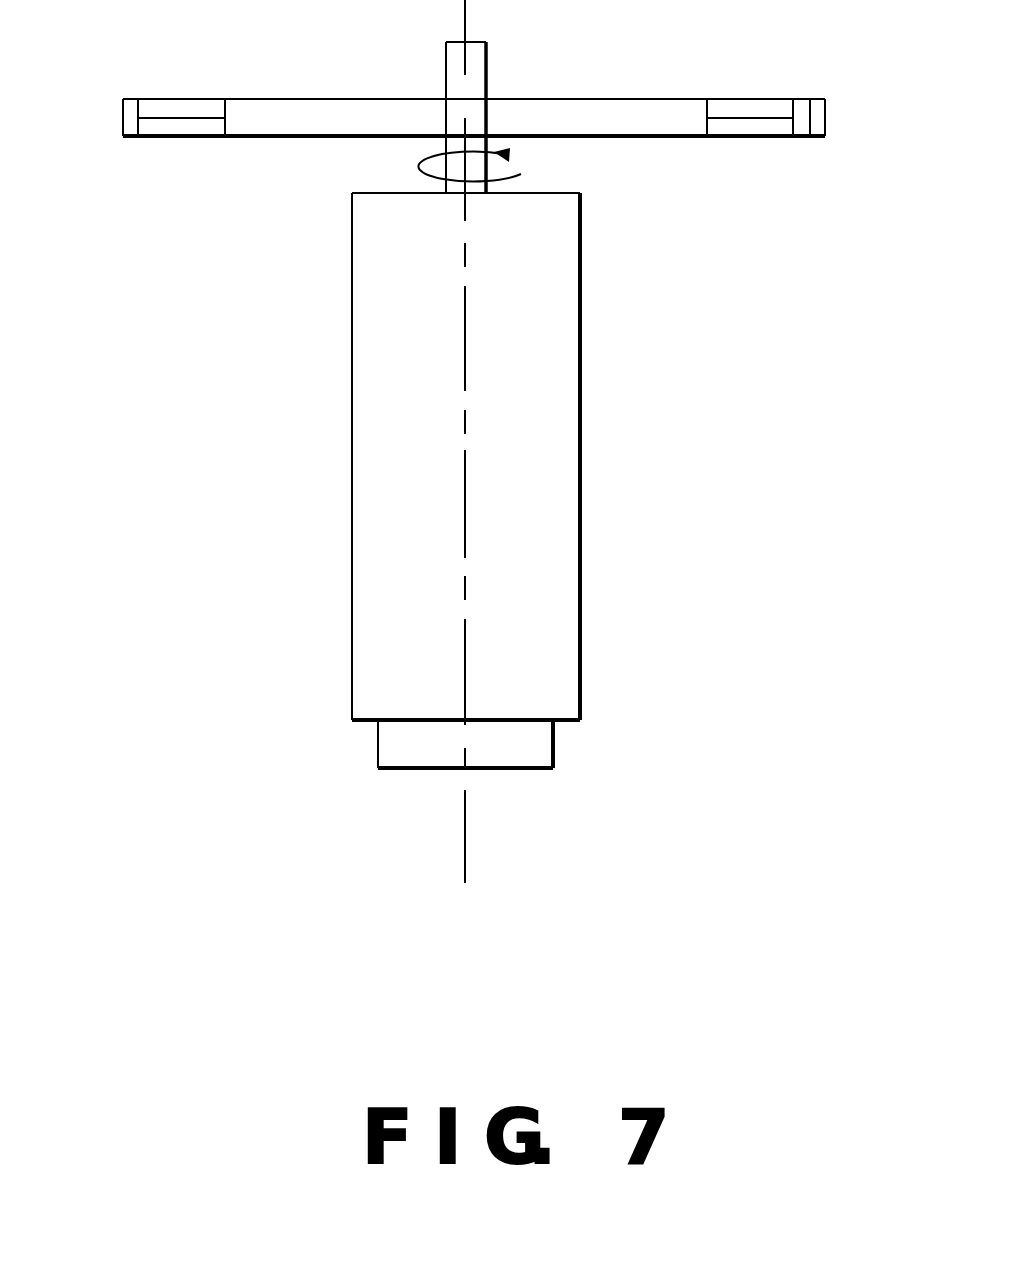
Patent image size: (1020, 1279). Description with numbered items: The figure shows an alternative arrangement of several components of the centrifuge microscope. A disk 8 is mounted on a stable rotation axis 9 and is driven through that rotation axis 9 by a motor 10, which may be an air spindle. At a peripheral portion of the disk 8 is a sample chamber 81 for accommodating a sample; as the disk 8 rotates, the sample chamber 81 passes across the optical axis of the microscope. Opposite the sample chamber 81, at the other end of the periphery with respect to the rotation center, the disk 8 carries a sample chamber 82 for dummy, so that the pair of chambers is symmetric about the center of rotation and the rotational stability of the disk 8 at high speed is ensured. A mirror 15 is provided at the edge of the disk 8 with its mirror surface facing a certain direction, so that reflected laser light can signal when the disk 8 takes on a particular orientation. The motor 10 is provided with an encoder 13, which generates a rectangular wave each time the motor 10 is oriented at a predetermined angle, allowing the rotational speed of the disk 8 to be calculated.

The disk 8 is at (277, 110).
The sample chamber 81 is at (150, 107).
The sample chamber for dummy 82 is at (757, 107).
The mirror 15 is at (826, 125).
The rotation axis 9 is at (488, 190).
The motor 10 is at (555, 683).
The encoder 13 is at (520, 753).